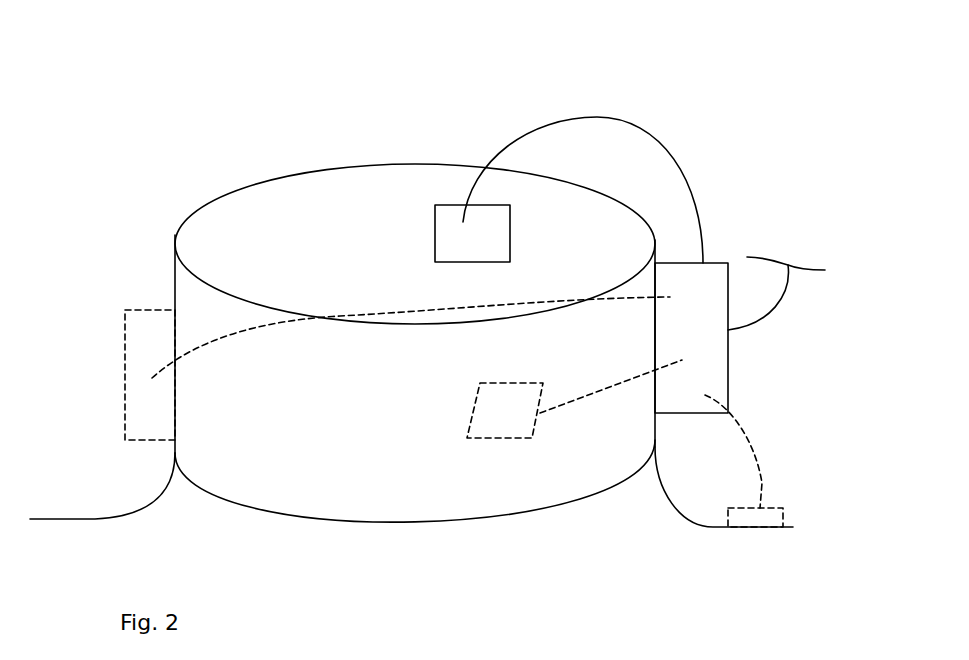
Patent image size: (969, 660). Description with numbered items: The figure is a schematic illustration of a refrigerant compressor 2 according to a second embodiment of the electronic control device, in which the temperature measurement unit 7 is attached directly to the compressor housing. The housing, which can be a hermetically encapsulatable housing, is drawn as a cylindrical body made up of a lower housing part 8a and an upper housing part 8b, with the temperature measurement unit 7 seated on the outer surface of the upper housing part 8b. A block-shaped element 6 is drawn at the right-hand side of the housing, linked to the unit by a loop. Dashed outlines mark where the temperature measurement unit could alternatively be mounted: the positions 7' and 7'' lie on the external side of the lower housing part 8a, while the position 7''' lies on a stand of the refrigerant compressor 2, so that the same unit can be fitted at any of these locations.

The refrigerant compressor 2 is at (625, 152).
The fastening block 6 is at (705, 353).
The temperature measurement unit 7 is at (355, 177).
The alternative attachment position 7' is at (356, 368).
The alternative attachment position 7'' is at (536, 494).
The alternative attachment position 7''' is at (775, 461).
The lower housing part 8a is at (332, 467).
The upper housing part 8b is at (227, 252).